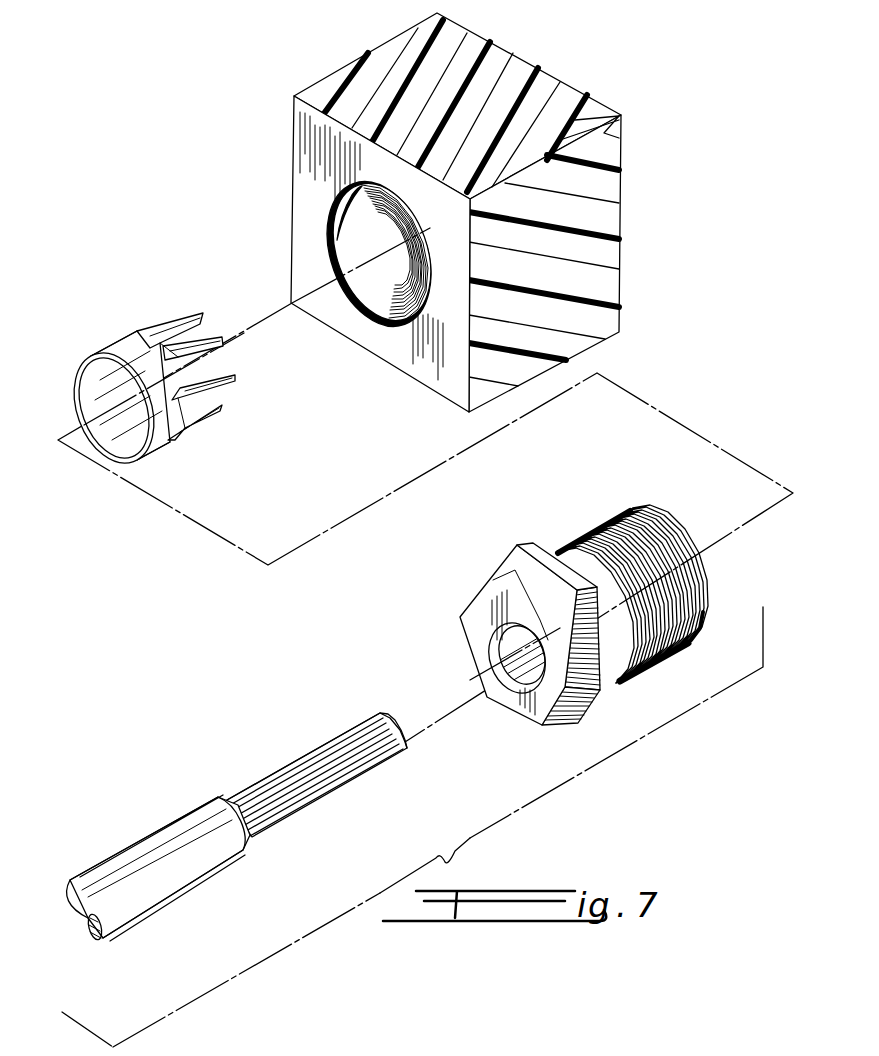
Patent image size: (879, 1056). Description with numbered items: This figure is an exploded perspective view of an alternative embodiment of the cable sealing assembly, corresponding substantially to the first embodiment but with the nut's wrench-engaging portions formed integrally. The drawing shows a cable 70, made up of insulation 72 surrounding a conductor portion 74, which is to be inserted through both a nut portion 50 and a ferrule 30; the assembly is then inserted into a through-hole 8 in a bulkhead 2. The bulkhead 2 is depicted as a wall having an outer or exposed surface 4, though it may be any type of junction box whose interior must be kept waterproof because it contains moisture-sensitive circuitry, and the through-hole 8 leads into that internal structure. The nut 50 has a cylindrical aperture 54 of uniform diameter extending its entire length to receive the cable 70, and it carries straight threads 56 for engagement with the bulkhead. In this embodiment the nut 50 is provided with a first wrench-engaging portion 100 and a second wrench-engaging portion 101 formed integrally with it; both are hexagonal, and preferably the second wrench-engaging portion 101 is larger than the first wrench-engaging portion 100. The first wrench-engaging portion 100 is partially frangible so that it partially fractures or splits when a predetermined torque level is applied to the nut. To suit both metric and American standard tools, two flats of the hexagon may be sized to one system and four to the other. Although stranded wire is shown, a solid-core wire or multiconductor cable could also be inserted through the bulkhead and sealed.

The bulkhead 2 is at (455, 212).
The outer or exposed surface 4 is at (300, 140).
The through-hole 8 is at (392, 288).
The ferrule 30 is at (122, 318).
The nut portion 50 is at (594, 592).
The cylindrical aperture 54 is at (500, 650).
The straight threads 56 is at (603, 522).
The cable 70 is at (237, 813).
The insulation 72 is at (192, 817).
The conductor portion 74 is at (313, 747).
The first wrench-engaging portion 100 is at (499, 602).
The second wrench-engaging portion 101 is at (528, 548).